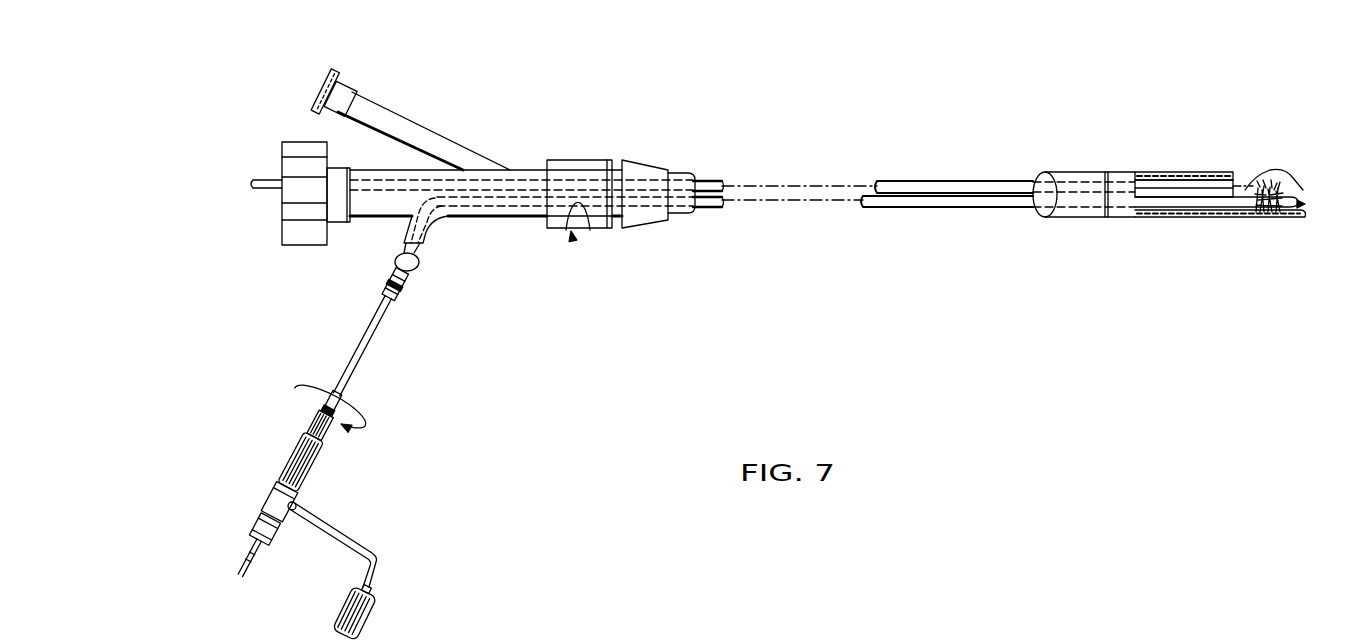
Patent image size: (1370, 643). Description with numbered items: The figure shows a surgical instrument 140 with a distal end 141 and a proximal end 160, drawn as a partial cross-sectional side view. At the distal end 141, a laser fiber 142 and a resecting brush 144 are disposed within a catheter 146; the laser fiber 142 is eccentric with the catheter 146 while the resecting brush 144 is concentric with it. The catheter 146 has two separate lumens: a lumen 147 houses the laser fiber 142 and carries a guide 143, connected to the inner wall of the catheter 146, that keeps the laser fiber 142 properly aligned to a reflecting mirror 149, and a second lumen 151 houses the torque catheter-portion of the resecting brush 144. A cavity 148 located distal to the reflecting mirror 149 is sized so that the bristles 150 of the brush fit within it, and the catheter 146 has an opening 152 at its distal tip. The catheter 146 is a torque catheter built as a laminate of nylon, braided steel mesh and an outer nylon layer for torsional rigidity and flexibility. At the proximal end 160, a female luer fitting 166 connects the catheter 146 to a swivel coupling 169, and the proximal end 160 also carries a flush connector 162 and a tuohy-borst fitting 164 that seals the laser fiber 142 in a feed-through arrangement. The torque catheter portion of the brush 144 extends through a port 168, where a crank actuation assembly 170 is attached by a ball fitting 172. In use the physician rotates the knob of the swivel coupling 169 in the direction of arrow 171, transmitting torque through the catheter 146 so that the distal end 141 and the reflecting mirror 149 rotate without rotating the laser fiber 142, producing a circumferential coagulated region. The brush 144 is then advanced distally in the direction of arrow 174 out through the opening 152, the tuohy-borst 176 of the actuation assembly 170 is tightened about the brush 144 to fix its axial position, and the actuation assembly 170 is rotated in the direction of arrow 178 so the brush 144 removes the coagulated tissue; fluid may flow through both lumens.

The surgical instrument 140 is at (887, 87).
The distal end 141 is at (1191, 227).
The laser fiber 142 is at (264, 196).
The guide 143 is at (1208, 178).
The resecting brush 144 is at (503, 204).
The catheter 146 is at (1055, 172).
The lumen 147 is at (1145, 172).
The cavity 148 is at (1292, 190).
The reflecting mirror 149 is at (1263, 173).
The bristles 150 is at (1285, 173).
The second lumen 151 is at (1172, 217).
The opening 152 is at (1308, 202).
The proximal end 160 is at (555, 287).
The flush connector 162 is at (340, 88).
The tuohy-borst fitting 164 is at (302, 143).
The female luer fitting 166 is at (642, 160).
The port 168 is at (421, 250).
The swivel coupling 169 is at (608, 228).
The crank actuation assembly 170 is at (348, 448).
The arrow 171 is at (575, 240).
The ball fitting 172 is at (408, 272).
The arrow 174 is at (238, 540).
The tuohy-borst 176 is at (255, 522).
The arrow 178 is at (357, 423).